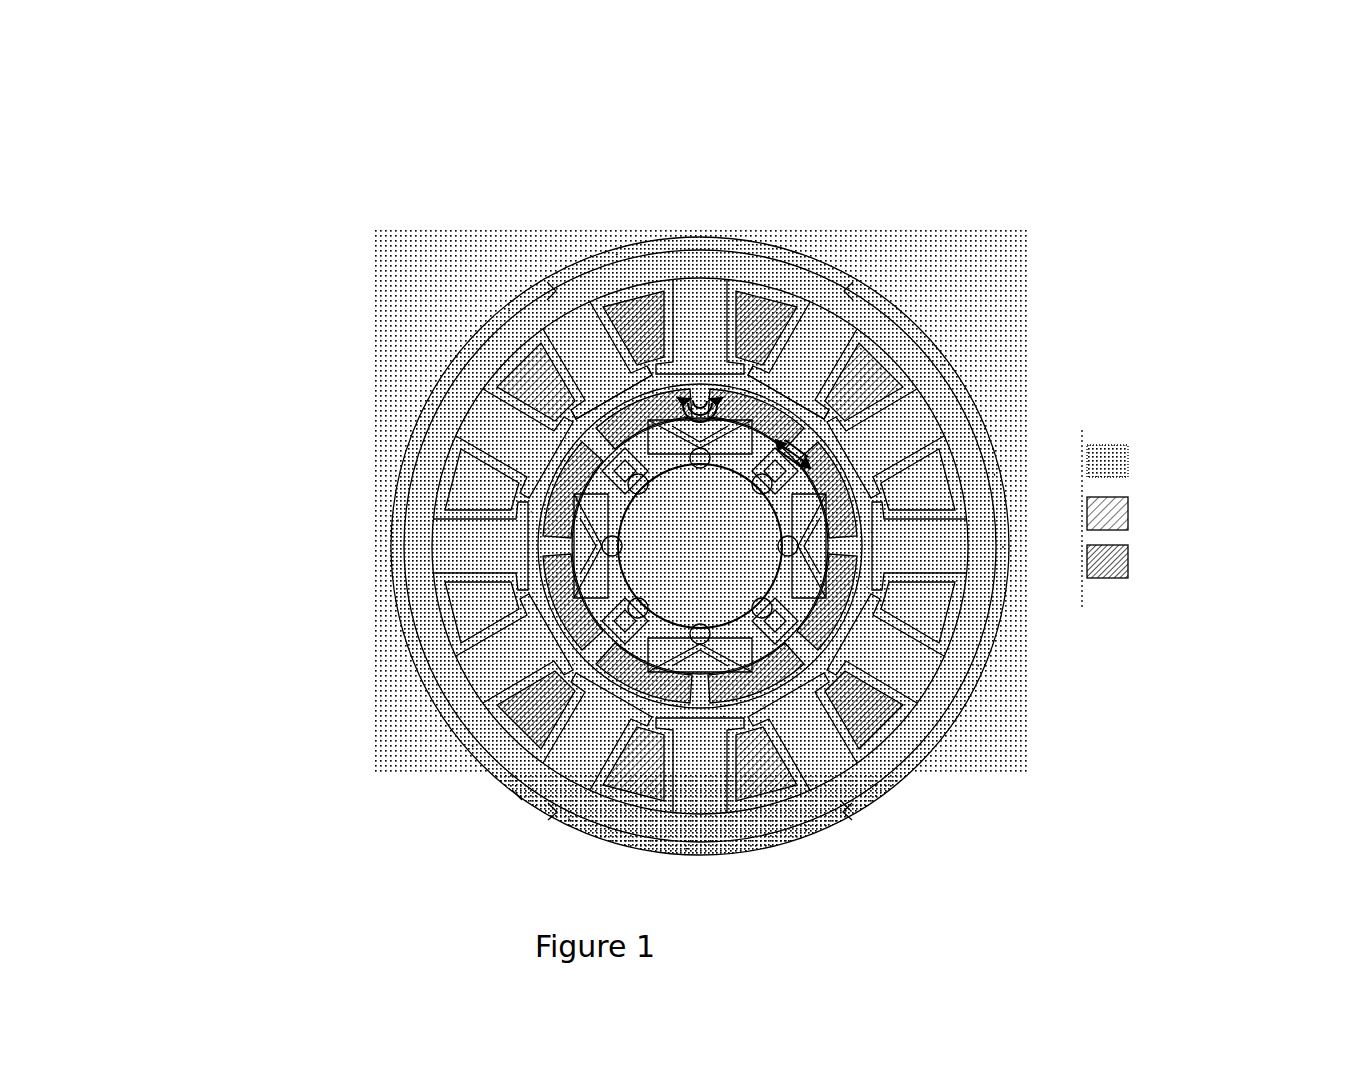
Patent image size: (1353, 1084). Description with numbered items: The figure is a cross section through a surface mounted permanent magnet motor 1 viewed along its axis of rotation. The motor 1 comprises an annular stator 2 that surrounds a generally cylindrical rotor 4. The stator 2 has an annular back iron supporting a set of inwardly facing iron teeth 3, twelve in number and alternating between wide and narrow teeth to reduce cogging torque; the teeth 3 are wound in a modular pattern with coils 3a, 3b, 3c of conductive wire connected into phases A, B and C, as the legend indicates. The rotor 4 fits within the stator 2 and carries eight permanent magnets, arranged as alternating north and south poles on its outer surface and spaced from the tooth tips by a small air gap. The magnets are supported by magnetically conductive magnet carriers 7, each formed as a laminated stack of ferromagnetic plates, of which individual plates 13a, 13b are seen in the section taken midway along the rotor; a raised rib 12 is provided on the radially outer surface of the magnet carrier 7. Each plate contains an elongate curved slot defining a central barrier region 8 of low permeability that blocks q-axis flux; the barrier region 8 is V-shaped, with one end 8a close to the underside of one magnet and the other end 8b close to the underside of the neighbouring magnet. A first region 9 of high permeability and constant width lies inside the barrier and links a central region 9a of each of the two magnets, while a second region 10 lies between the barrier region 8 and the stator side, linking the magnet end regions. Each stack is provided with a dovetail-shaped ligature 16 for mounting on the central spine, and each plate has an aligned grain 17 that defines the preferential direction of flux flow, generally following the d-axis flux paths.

The surface mounted permanent magnet motor 1 is at (412, 302).
The stator 2 is at (420, 400).
The stator teeth 3 is at (440, 640).
The phase A coils 3a is at (1005, 472).
The phase B coils 3b is at (1005, 470).
The phase C coils 3c is at (985, 635).
The rotor 4 is at (880, 560).
The magnet carrier 7 is at (515, 432).
The barrier region 8 is at (545, 548).
The end of barrier region 8a is at (600, 398).
The other end of barrier region 8b is at (795, 400).
The first region 9 is at (460, 730).
The central region of magnet 9a is at (937, 740).
The second region 10 is at (847, 805).
The raised rib 12 is at (548, 522).
The permanent magnet 13a is at (700, 392).
The permanent magnet 13b is at (820, 440).
The ligature 16 is at (512, 792).
The aligned grain 17 is at (700, 400).